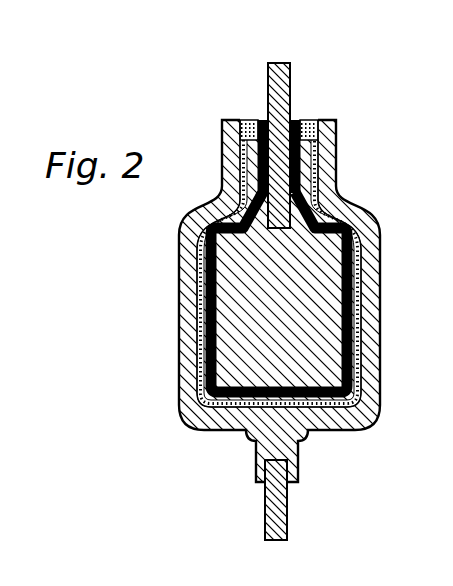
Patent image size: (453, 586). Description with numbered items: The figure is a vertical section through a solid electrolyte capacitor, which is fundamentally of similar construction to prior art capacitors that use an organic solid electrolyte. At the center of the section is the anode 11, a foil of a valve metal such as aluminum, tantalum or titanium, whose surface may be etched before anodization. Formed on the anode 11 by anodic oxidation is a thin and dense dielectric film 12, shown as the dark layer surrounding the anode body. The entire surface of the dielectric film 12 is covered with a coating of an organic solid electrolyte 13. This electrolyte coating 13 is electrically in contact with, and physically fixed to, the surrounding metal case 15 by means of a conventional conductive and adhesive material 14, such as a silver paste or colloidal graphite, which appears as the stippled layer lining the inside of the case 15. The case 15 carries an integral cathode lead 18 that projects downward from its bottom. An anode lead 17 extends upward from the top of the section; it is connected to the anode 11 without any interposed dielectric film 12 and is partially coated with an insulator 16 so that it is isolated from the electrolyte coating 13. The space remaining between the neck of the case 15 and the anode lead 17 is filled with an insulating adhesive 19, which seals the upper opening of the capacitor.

The anode 11 is at (320, 261).
The dielectric film 12 is at (218, 293).
The organic solid electrolyte coating 13 is at (205, 327).
The conductive and adhesive material 14 is at (193, 371).
The metal case 15 is at (190, 408).
The insulator 16 is at (297, 120).
The anode lead 17 is at (290, 68).
The cathode lead 18 is at (265, 520).
The insulating adhesive 19 is at (247, 120).